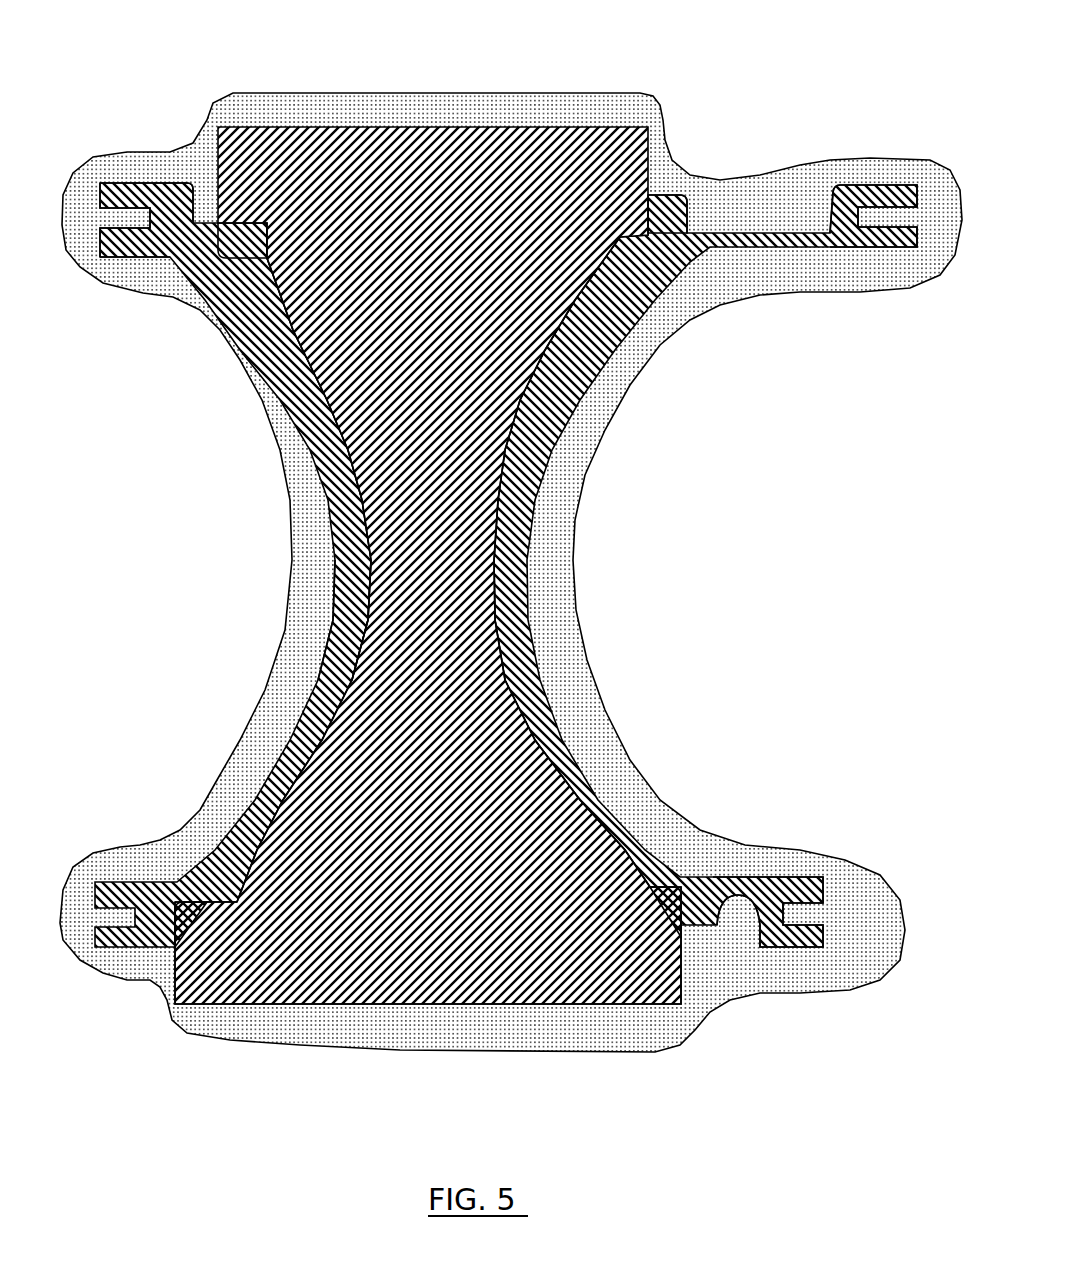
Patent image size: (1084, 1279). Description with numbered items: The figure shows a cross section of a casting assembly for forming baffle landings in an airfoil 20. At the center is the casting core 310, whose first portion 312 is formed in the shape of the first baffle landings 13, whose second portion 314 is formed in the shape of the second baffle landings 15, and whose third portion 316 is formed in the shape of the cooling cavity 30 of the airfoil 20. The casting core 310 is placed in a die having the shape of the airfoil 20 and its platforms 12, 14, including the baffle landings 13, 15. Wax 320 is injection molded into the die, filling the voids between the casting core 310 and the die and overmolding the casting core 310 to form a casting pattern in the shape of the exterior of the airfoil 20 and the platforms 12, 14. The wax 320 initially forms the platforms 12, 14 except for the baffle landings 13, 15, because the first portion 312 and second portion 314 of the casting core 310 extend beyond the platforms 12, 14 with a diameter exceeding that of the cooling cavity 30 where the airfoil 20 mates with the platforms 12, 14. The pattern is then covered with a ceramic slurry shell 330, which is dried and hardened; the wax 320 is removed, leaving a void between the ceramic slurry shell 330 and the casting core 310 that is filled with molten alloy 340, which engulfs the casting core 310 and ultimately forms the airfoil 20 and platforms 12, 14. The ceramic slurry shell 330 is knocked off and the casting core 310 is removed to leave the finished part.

The cooling cavity 30 is at (503, 552).
The casting core 310 is at (535, 140).
The first portion of the casting core 312 is at (290, 135).
The second portion of the casting core 314 is at (345, 1000).
The third portion of the casting core 316 is at (370, 560).
The first baffle landings 13 is at (245, 255).
The second baffle landings 15 is at (180, 945).
The platform 12 is at (875, 188).
The platform 14 is at (825, 882).
The ceramic slurry shell 330 is at (160, 285).
The airfoil 20 is at (481, 565).
The wax 320 is at (481, 565).
The molten alloy 340 is at (265, 340).